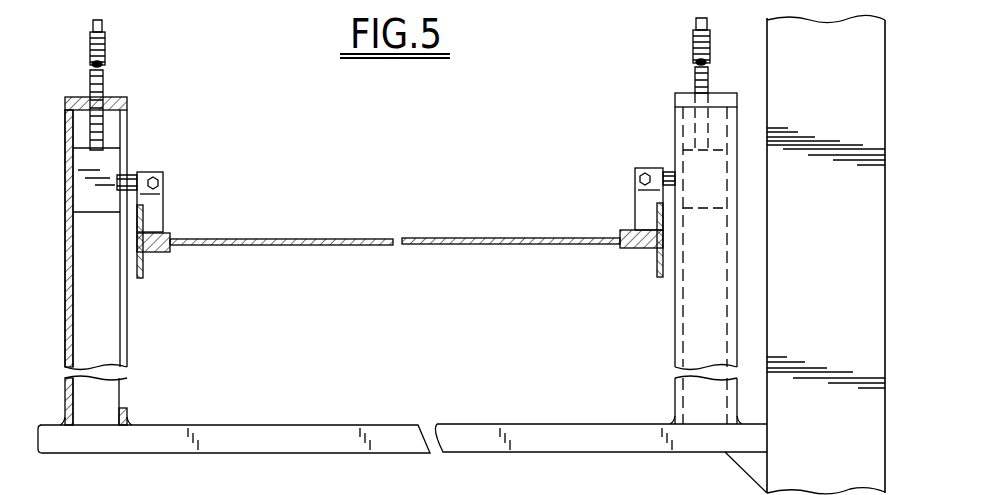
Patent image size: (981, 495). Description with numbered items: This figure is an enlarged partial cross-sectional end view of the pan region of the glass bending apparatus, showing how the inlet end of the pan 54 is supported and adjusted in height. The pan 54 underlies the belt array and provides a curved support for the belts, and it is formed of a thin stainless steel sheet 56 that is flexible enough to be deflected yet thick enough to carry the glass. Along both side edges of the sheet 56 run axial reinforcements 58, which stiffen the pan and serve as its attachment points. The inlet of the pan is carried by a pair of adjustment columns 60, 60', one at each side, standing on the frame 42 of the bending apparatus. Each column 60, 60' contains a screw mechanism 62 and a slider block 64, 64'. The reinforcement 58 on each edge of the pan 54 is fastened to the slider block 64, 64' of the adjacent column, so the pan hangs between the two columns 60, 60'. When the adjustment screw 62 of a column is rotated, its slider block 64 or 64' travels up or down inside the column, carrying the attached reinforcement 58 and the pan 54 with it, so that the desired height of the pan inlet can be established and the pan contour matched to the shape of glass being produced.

The frame 42 is at (490, 424).
The pan 54 is at (497, 229).
The stainless steel sheet 56 is at (550, 246).
The reinforcement 58 is at (143, 268).
The adjustment column 60 is at (129, 261).
The adjustment column 60' is at (672, 221).
The screw mechanism 62 is at (105, 58).
The slider block 64 is at (143, 166).
The slider block 64' is at (665, 150).